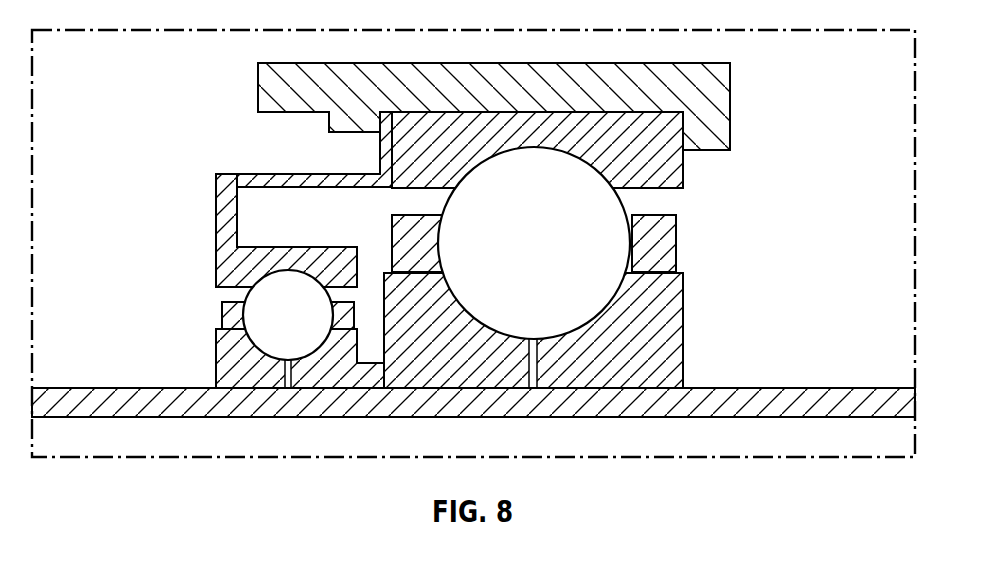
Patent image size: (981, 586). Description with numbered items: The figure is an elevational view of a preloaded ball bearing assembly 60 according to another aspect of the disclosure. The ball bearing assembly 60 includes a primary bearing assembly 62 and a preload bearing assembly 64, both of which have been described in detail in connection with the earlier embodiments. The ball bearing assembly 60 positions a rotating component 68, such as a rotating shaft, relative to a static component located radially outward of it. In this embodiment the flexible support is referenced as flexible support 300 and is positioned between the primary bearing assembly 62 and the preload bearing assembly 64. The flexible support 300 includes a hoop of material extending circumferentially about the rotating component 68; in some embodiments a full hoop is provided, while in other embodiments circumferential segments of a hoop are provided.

The preloaded ball bearing assembly 60 is at (737, 168).
The primary bearing assembly 62 is at (688, 248).
The preload bearing assembly 64 is at (210, 319).
The rotating component 68 is at (115, 393).
The flexible support 300 is at (247, 180).